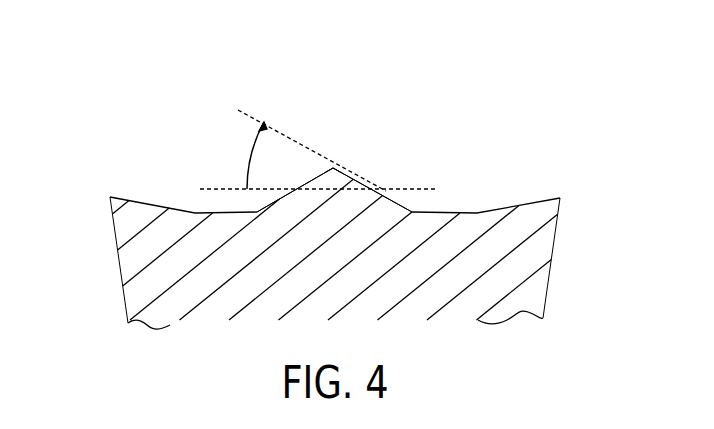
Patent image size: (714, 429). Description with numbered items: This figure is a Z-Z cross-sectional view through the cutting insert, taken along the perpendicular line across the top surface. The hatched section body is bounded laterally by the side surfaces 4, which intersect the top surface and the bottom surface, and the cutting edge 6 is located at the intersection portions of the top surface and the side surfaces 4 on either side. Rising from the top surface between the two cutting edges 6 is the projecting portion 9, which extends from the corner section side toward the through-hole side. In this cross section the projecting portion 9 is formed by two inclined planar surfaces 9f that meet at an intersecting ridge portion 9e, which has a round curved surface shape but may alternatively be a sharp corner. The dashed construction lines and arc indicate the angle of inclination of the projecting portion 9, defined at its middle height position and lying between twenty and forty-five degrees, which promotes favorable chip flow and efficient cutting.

The side surface 4 is at (125, 288).
The cutting edge 6 is at (110, 197).
The projecting portion 9 is at (453, 77).
The intersecting ridge portion 9e is at (333, 168).
The inclined planar surface 9f is at (287, 190).